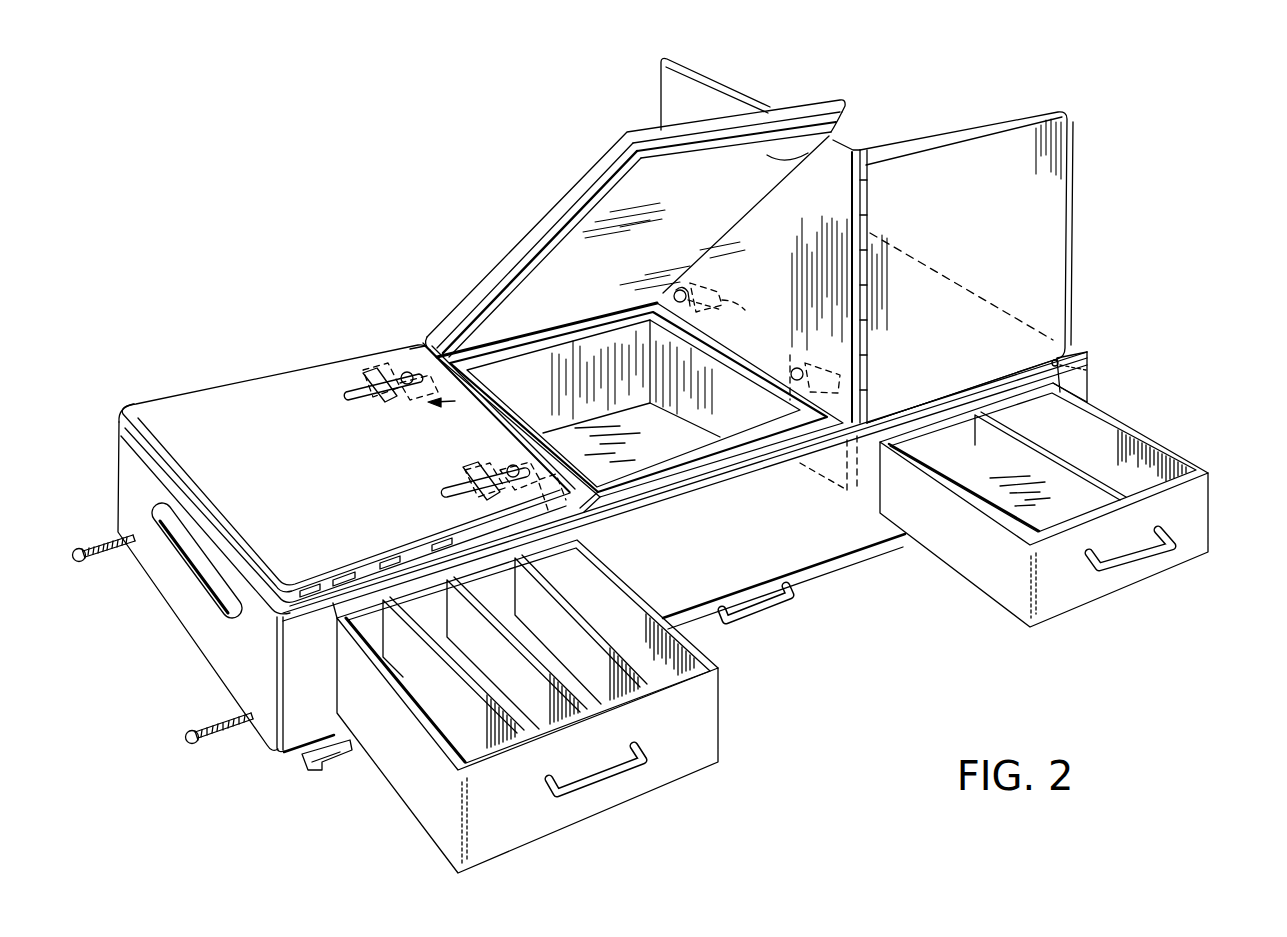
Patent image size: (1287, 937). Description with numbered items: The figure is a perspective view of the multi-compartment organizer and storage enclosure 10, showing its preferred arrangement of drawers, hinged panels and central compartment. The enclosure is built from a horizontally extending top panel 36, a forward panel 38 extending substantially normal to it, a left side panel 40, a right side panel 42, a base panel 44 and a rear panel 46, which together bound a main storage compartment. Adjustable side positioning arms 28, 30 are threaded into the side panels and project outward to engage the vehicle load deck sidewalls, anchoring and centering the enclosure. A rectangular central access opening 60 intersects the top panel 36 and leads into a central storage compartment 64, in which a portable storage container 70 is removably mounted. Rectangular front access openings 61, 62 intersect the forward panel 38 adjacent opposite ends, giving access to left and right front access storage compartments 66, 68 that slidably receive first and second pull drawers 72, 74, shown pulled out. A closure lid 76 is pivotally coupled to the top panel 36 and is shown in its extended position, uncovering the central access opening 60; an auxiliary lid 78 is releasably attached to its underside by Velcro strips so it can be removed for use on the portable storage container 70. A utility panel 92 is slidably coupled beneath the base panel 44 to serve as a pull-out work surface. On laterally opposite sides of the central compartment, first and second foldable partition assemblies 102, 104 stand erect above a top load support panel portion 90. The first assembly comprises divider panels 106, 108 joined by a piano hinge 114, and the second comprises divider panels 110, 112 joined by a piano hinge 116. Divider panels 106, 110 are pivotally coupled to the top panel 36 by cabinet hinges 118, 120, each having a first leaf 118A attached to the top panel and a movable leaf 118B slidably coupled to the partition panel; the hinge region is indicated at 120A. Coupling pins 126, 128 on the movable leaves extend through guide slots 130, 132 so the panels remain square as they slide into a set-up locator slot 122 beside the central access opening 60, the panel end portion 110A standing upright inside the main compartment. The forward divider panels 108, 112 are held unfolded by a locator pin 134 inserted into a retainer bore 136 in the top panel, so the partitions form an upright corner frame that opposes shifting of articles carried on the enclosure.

The storage enclosure 10 is at (392, 255).
The side positioning arm 28 is at (210, 716).
The side positioning arm 30 is at (121, 552).
The top panel 36 is at (133, 408).
The forward panel 38 is at (762, 555).
The left side panel 40 is at (223, 638).
The right side panel 42 is at (1062, 364).
The base panel 44 is at (290, 760).
The rear panel 46 is at (418, 343).
The central access opening 60 is at (653, 480).
The front access opening 61 is at (357, 615).
The front access opening 62 is at (950, 425).
The central storage compartment 64 is at (662, 447).
The left front access storage compartment 66 is at (458, 616).
The right front access storage compartment 68 is at (992, 436).
The portable storage container 70 is at (738, 340).
The first pull drawer 72 is at (700, 742).
The second pull drawer 74 is at (1184, 505).
The closure lid 76 is at (537, 226).
The auxiliary lid 78 is at (813, 150).
The right top load support panel portion 90 is at (897, 270).
The utility panel 92 is at (853, 562).
The first foldable partition assembly 102 is at (263, 344).
The second foldable partition assembly 104 is at (1106, 127).
The first divider panel 106 is at (160, 437).
The second divider panel 108 is at (180, 473).
The first divider panel 110 is at (702, 62).
The panel end portion 110A is at (813, 477).
The second divider panel 112 is at (1068, 248).
The piano hinge 114 is at (365, 568).
The piano hinge 116 is at (868, 203).
The cabinet hinge 118 is at (480, 468).
The first leaf 118A is at (548, 510).
The movable leaf 118B is at (465, 470).
The cabinet hinge 120 is at (500, 390).
The hinge plate 120A is at (410, 405).
The set-up locator slot 122 is at (577, 503).
The coupling pin 126 is at (498, 463).
The coupling pin 128 is at (405, 372).
The guide slot 130 is at (451, 492).
The guide slot 132 is at (346, 402).
The locator pin 134 is at (1058, 363).
The retainer bore 136 is at (1062, 372).